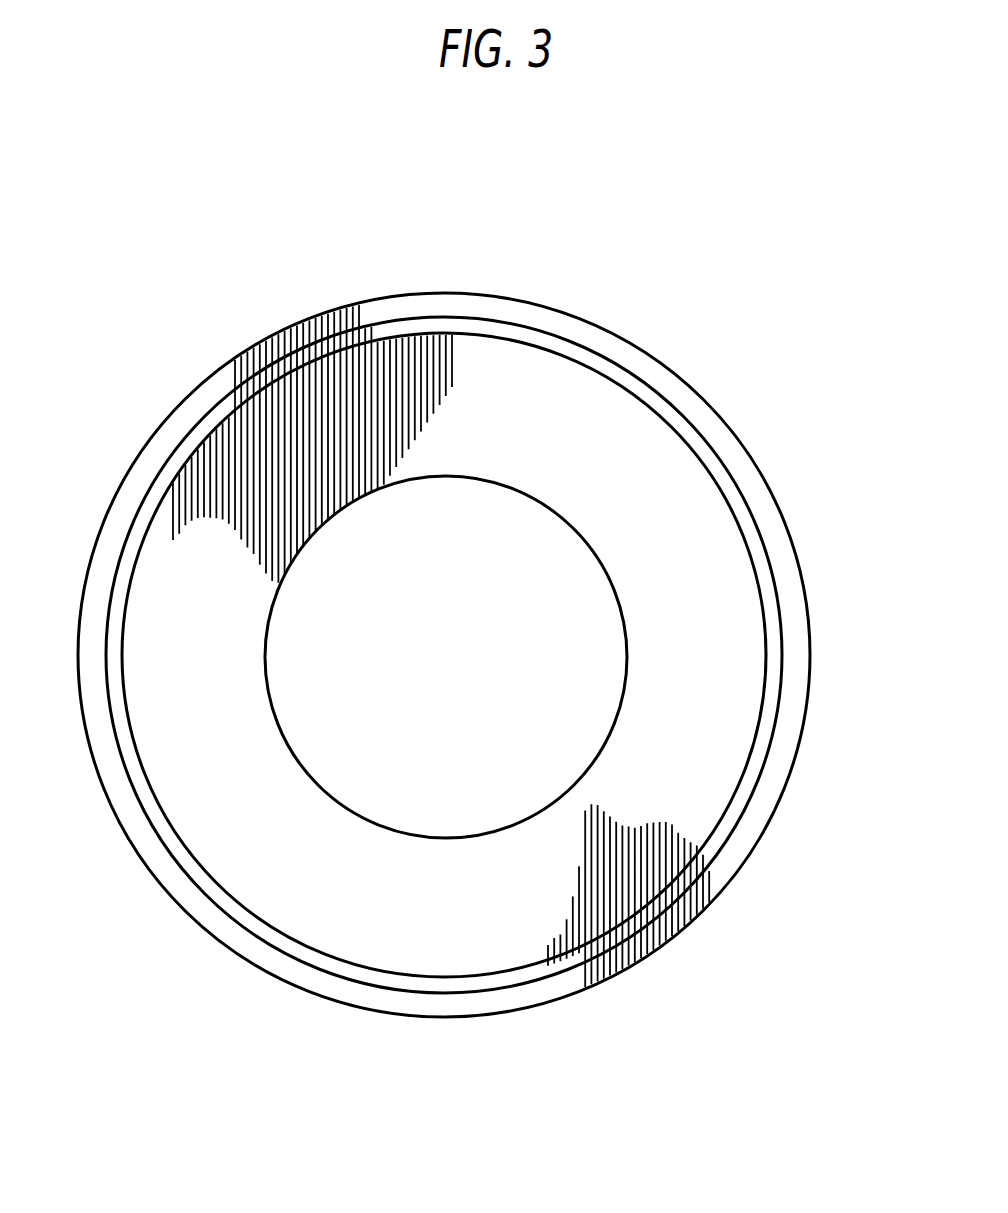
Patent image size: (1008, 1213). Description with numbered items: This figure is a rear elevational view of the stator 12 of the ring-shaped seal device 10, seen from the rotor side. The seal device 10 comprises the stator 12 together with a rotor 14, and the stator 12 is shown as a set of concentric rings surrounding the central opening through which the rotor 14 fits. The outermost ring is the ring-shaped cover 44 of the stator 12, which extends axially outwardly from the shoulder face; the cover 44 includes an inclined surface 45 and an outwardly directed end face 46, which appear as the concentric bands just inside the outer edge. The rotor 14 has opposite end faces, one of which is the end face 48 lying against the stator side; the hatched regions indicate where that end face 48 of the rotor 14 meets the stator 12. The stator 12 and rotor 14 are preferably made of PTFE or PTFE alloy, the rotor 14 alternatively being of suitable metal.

The seal device 10 is at (733, 366).
The stator 12 is at (783, 507).
The rotor 14 is at (270, 698).
The cover 44 is at (795, 771).
The inclined surface 45 is at (797, 679).
The end face 46 is at (777, 645).
The end face 48 is at (712, 810).